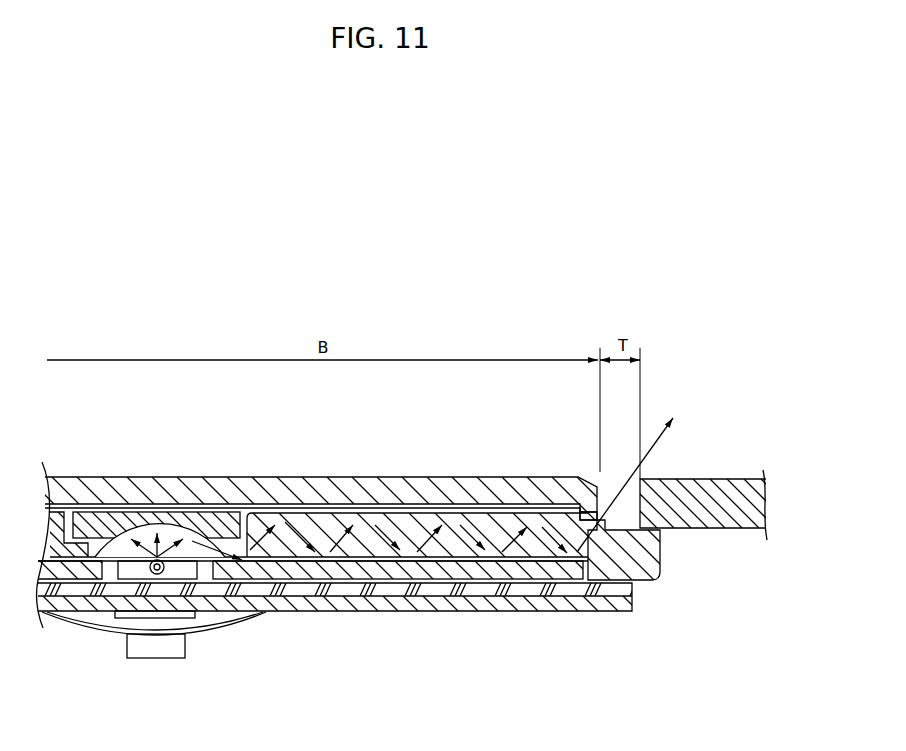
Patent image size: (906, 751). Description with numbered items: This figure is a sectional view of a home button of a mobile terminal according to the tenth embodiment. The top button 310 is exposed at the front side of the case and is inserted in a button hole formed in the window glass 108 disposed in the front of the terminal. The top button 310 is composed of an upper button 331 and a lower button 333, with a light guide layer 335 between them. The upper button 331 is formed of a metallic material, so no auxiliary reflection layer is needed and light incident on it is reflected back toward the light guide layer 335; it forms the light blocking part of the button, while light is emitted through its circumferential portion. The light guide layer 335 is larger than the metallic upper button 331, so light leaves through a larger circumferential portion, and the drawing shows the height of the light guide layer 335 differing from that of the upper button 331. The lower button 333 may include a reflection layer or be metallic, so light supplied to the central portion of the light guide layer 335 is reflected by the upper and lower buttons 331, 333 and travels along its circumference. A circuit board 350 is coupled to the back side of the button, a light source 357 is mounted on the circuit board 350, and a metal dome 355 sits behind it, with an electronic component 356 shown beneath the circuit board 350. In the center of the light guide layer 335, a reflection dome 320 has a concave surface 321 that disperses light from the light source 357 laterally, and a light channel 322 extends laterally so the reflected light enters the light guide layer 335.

The window glass 108 is at (718, 492).
The top button 310 is at (318, 476).
The upper button 331 is at (372, 490).
The light guide layer 335 is at (425, 527).
The lower button 333 is at (493, 572).
The reflection dome 320 is at (127, 465).
The light channel 322 is at (104, 543).
The concave surface 321 is at (164, 528).
The circuit board 350 is at (323, 611).
The metal dome 355 is at (230, 628).
The electronic component 356 is at (158, 650).
The light source 357 is at (127, 573).